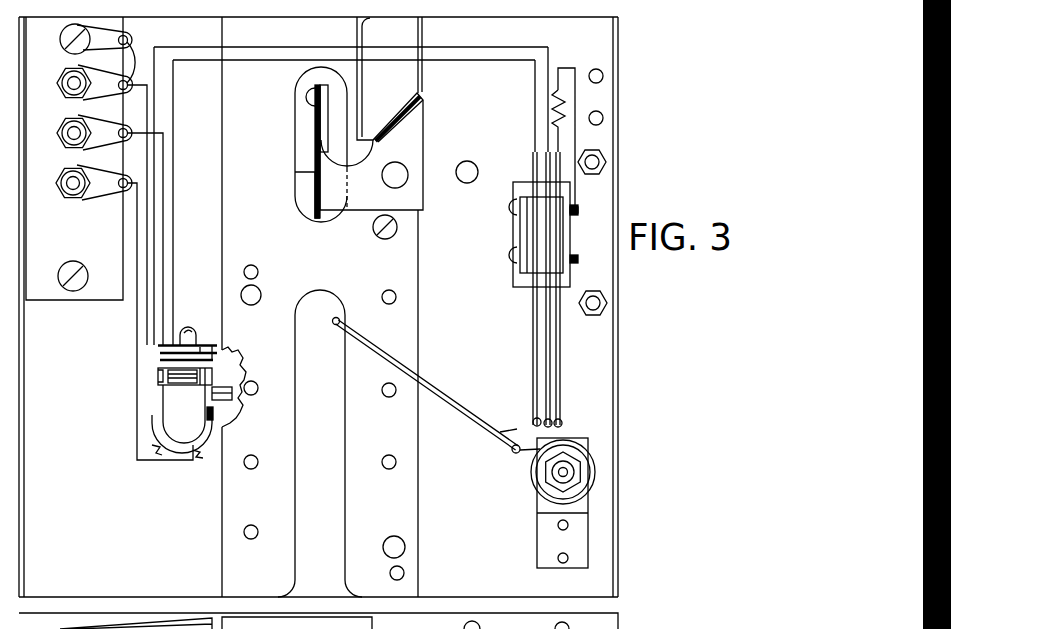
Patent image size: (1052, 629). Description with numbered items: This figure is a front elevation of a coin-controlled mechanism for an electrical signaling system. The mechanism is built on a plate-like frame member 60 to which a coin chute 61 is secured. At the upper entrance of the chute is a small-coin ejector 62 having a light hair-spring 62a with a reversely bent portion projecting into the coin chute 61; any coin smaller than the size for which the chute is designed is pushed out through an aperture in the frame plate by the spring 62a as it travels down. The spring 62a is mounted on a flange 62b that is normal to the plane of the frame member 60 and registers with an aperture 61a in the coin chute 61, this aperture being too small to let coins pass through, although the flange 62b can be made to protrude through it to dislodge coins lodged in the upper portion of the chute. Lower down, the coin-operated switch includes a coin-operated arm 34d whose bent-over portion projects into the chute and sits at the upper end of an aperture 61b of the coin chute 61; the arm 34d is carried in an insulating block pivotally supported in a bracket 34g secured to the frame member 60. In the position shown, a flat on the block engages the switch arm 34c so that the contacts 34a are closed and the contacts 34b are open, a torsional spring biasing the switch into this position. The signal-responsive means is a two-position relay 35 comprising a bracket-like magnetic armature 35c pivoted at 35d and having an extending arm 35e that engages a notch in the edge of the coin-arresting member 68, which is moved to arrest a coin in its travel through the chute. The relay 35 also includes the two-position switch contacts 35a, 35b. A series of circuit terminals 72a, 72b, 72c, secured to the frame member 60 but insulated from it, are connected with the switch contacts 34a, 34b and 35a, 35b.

The frame member 60 is at (605, 136).
The coin chute 61 is at (220, 178).
The aperture in the coin chute 61a is at (300, 148).
The aperture of the coin chute 61b is at (333, 521).
The small-coin ejector 62 is at (418, 138).
The hair-spring 62a is at (318, 192).
The flange 62b is at (323, 112).
The circuit terminal 72a is at (92, 63).
The circuit terminal 72b is at (97, 123).
The circuit terminal 72c is at (93, 173).
The two-position relay 35 is at (160, 430).
The two-position switch contact 35a is at (162, 353).
The two-position switch contact 35b is at (160, 345).
The magnetic armature 35c is at (175, 408).
The armature pivot 35d is at (158, 373).
The extending arm 35e is at (232, 380).
The coin-arresting member 68 is at (238, 407).
The contacts 34a is at (560, 415).
The contacts 34b is at (541, 420).
The switch arm 34c is at (543, 332).
The coin-operated arm 34d is at (445, 393).
The bracket 34g is at (543, 508).